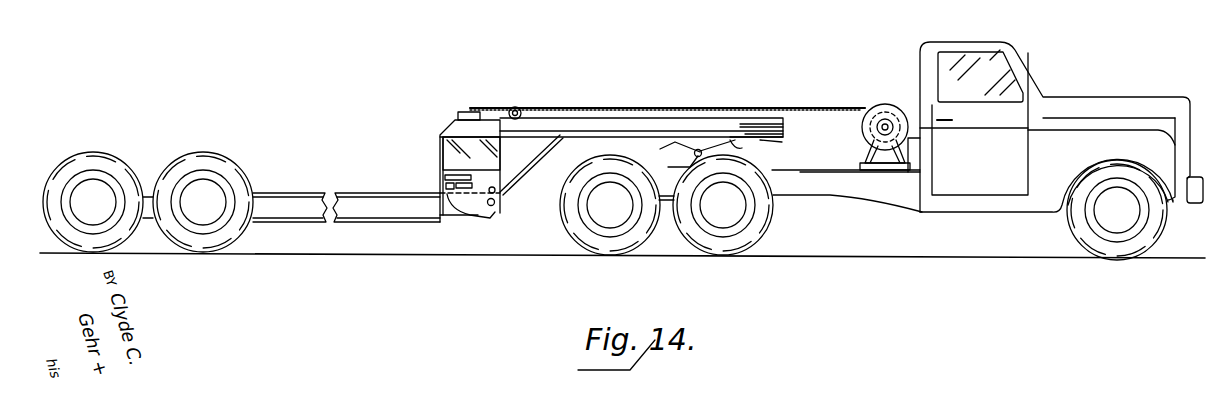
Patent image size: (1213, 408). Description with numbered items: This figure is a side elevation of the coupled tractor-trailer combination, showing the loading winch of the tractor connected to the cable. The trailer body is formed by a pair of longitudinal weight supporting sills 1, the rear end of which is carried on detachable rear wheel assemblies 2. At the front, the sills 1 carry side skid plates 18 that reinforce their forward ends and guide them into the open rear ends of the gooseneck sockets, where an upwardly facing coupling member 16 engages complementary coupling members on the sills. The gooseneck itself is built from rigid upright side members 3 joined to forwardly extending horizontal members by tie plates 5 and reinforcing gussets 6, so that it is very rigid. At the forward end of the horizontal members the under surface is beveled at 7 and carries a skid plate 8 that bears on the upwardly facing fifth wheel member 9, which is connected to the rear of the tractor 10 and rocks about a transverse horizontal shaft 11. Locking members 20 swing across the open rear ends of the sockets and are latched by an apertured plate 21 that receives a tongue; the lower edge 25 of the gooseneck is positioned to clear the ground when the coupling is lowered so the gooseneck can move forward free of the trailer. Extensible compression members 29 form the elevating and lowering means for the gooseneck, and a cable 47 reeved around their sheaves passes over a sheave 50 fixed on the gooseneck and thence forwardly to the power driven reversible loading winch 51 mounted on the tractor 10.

The longitudinal weight supporting girders or sills 1 is at (292, 193).
The rear wheel assemblies 2 is at (116, 154).
The upright side members 3 is at (471, 153).
The tie plates 5 is at (440, 150).
The reinforcing gussets 6 is at (527, 164).
The bevel 7 is at (783, 142).
The skid plate 8 is at (760, 141).
The fifth wheel member 9 is at (724, 149).
The tractor 10 is at (802, 177).
The horizontal shaft 11 is at (685, 152).
The coupling member 16 is at (498, 203).
The side skid plates 18 is at (455, 214).
The locking members or plates 20 is at (445, 178).
The plate 21 is at (446, 186).
The lower edge of the gooseneck 25 is at (490, 212).
The extensible compression members 29 is at (470, 112).
The cable 47 is at (552, 110).
The sheave 50 is at (516, 107).
The power driven reversible loading winch 51 is at (885, 105).